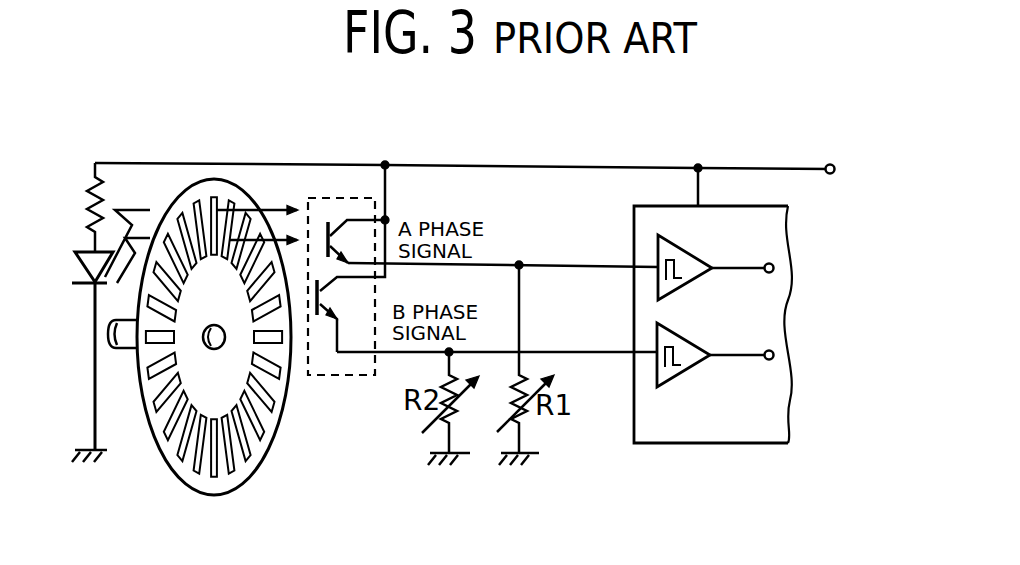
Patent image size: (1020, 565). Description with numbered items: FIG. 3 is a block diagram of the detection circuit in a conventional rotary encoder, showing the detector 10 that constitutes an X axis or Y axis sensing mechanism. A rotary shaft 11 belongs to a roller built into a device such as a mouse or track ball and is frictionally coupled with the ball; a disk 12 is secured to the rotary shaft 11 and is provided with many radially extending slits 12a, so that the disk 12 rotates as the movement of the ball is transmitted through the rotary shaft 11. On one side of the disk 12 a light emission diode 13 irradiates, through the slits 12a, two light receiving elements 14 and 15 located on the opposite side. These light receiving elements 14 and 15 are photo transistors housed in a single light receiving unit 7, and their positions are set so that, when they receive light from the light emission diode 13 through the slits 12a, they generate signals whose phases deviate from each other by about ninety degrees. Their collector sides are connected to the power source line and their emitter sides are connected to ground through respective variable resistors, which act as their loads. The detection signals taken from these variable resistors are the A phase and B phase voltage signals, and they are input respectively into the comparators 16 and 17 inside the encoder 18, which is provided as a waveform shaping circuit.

The detector 10 is at (492, 107).
The light emission diode 13 is at (76, 250).
The rotary shaft 11 is at (125, 348).
The disk 12 is at (232, 473).
The slits 12a is at (253, 218).
The light receiving unit 7 is at (333, 197).
The light receiving element 14 is at (335, 218).
The light receiving element 15 is at (332, 280).
The encoder 18 is at (640, 218).
The comparator 16 is at (690, 255).
The comparator 17 is at (693, 341).